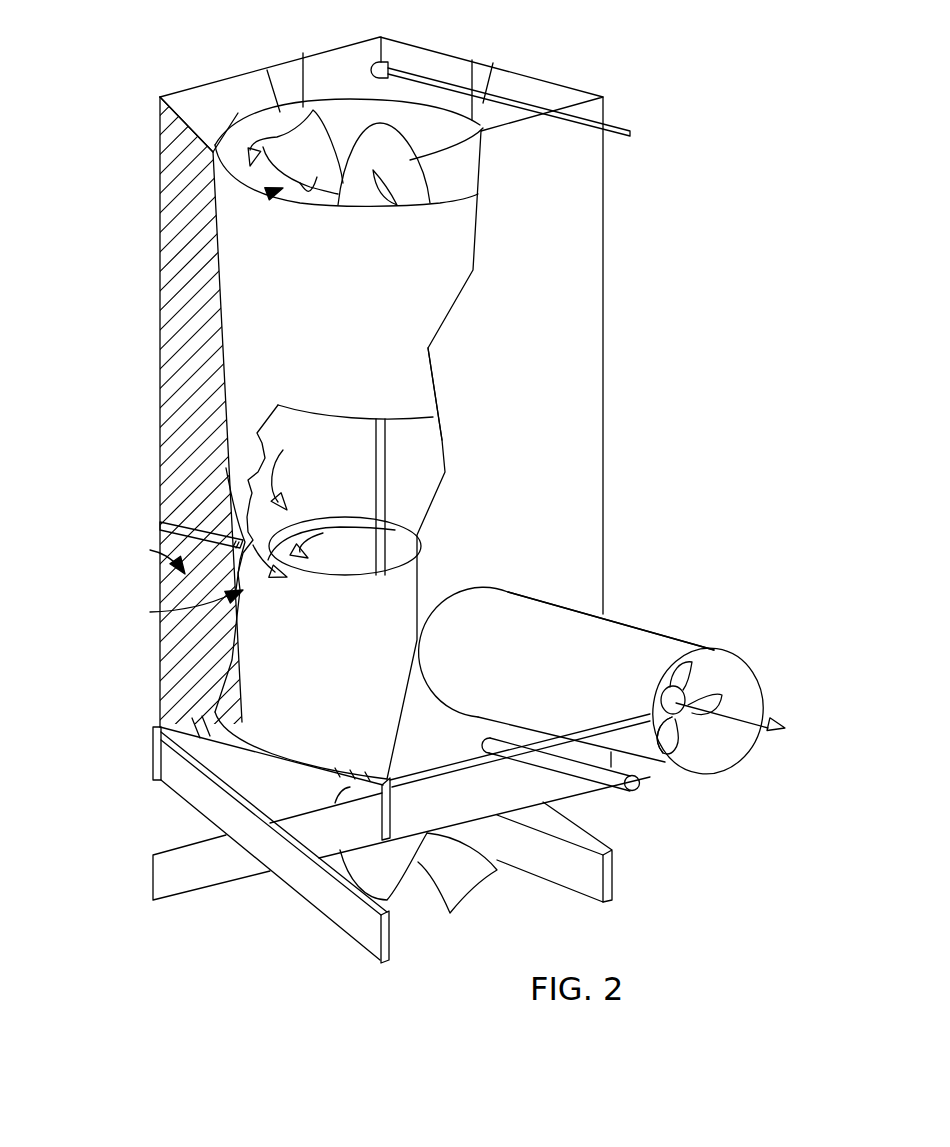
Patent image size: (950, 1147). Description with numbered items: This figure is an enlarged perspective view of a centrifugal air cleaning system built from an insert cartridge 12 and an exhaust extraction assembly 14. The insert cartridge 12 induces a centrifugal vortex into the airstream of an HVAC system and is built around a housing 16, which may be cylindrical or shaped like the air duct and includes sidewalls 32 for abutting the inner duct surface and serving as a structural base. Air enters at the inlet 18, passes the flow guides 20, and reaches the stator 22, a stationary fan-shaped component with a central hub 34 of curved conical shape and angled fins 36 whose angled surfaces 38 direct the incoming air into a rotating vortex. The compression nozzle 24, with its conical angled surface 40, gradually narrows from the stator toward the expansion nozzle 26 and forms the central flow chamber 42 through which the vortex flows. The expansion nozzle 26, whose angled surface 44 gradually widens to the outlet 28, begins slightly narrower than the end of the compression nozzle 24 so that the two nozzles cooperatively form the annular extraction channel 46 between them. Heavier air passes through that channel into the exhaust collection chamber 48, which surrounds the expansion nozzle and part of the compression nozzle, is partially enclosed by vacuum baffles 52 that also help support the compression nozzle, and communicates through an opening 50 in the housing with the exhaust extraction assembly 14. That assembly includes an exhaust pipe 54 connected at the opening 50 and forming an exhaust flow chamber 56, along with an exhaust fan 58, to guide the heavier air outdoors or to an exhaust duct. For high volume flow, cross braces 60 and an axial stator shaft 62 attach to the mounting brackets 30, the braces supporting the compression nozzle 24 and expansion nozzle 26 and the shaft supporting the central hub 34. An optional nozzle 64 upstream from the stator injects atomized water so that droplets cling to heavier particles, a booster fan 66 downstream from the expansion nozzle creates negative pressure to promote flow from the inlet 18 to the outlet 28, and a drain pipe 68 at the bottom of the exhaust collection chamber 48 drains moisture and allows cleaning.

The insert cartridge 12 is at (650, 66).
The exhaust extraction assembly 14 is at (609, 655).
The housing 16 is at (172, 429).
The inlet 18 is at (230, 46).
The flow guides 20 is at (210, 97).
The stator 22 is at (409, 95).
The compression nozzle 24 is at (194, 305).
The expansion nozzle 26 is at (192, 655).
The outlet 28 is at (286, 790).
The mounting brackets 30 is at (153, 746).
The sidewalls 32 is at (160, 436).
The central hub 34 is at (368, 125).
The fins 36 is at (270, 193).
The angled surfaces 38 is at (317, 177).
The conical angled surface 40 is at (327, 458).
The central flow chamber 42 is at (430, 464).
The angled surface 44 is at (400, 543).
The annular extraction channel 46 is at (150, 612).
The exhaust collection chamber 48 is at (150, 550).
The opening 50 is at (527, 580).
The vacuum baffles 52 is at (190, 524).
The exhaust pipe 54 is at (623, 623).
The exhaust flow chamber 56 is at (747, 667).
The exhaust fan 58 is at (697, 732).
The cross braces 60 is at (262, 900).
The axial stator shaft 62 is at (386, 498).
The nozzle 64 is at (450, 131).
The booster fan 66 is at (483, 900).
The drain pipe 68 is at (656, 794).